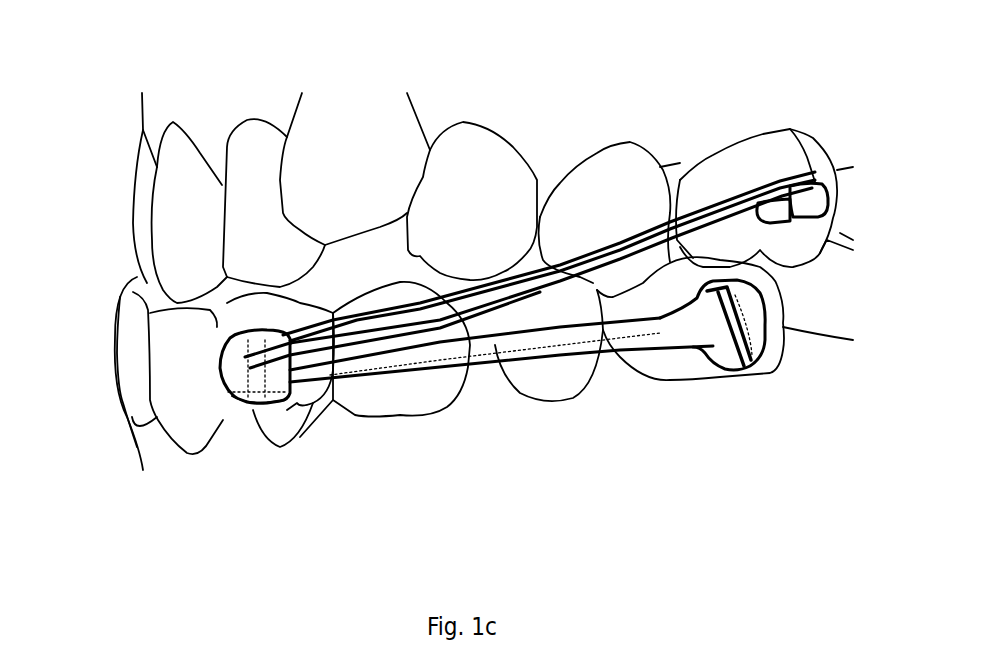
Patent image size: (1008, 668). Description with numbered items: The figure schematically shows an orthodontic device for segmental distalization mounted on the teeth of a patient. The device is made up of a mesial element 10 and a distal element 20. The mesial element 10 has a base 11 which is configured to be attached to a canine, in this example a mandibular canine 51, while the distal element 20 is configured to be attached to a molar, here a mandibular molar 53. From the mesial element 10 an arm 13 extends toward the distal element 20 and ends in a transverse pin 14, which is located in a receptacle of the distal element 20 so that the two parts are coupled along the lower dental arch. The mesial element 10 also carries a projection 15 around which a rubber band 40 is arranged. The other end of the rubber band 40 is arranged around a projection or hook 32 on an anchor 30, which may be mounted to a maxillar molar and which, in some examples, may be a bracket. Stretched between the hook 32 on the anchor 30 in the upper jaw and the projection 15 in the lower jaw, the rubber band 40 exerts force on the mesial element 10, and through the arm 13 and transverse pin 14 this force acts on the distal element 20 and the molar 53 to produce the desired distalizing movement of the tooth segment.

The mesial element 10 is at (417, 431).
The base 11 is at (253, 392).
The arm 13 is at (523, 345).
The transverse pin 14 is at (718, 330).
The projection 15 is at (228, 349).
The distal element 20 is at (767, 362).
The anchor 30 is at (840, 214).
The hook 32 is at (788, 127).
The rubber band 40 is at (685, 207).
The mandibular canine 51 is at (307, 400).
The mandibular molar 53 is at (677, 370).